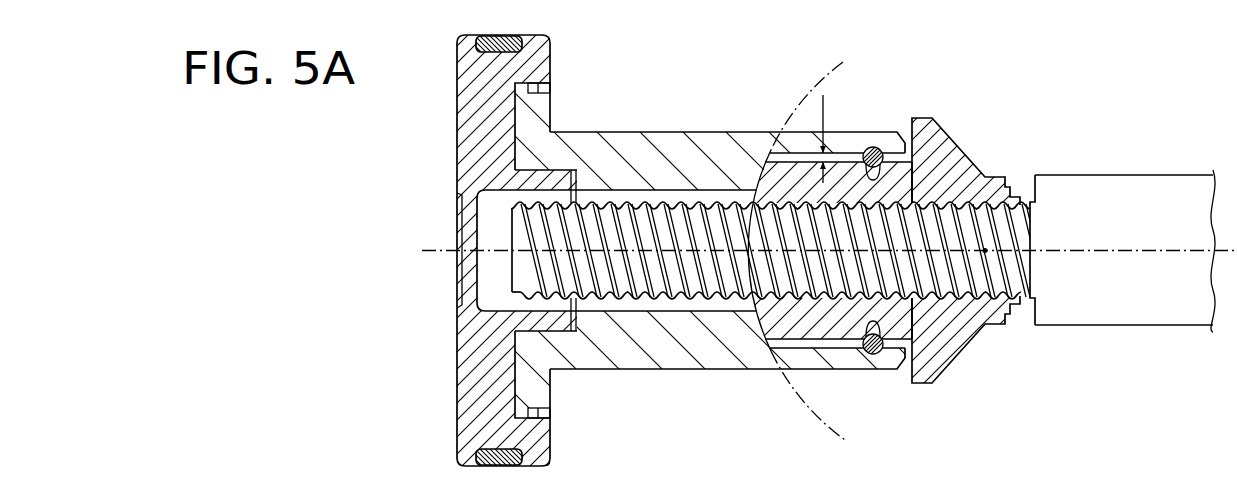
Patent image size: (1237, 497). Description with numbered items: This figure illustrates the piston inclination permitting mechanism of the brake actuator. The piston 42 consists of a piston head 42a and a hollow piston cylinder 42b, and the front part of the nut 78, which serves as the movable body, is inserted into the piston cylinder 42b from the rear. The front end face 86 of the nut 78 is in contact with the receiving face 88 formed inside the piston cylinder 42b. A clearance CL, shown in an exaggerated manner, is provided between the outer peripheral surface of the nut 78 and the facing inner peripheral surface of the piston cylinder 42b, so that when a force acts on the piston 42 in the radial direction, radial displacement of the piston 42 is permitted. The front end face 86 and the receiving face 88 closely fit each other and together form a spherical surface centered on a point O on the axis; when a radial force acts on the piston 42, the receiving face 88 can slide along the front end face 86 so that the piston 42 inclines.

The piston 42 is at (440, 137).
The piston head 42a is at (540, 53).
The piston cylinder 42b is at (675, 152).
The nut 78 is at (935, 152).
The front end face 86 is at (762, 187).
The receiving face 88 is at (775, 322).
The clearance CL is at (837, 139).
The point O is at (1000, 181).